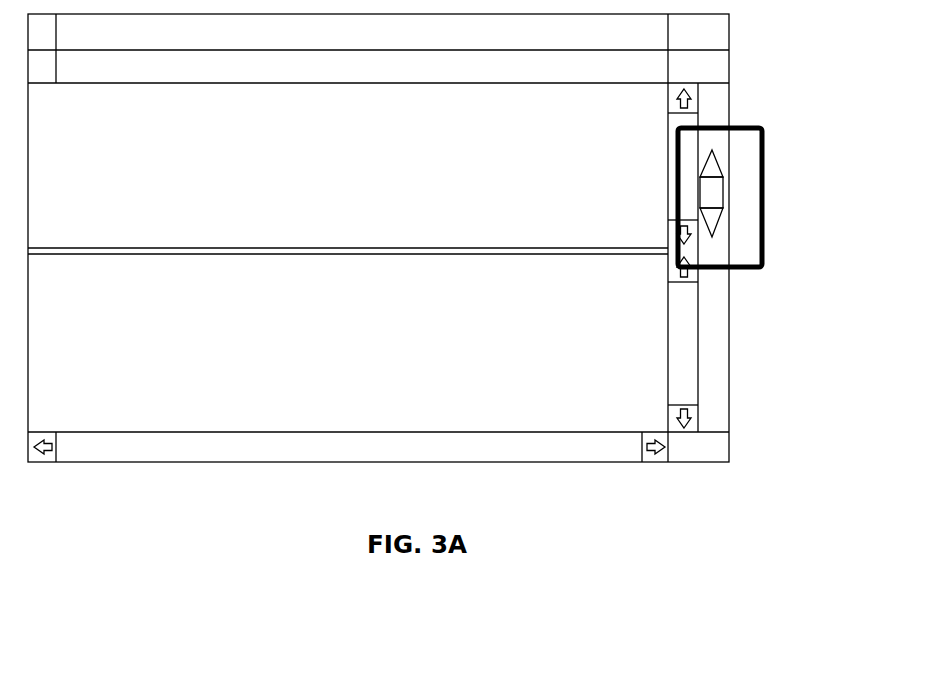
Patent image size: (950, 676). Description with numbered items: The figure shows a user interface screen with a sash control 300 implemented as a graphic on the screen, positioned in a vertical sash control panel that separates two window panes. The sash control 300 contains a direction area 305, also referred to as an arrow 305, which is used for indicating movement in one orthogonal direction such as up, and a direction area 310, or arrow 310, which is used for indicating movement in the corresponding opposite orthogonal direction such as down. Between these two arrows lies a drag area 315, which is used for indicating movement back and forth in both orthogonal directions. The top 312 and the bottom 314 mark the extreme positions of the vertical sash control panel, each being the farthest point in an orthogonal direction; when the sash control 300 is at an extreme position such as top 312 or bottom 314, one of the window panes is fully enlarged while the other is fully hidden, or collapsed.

The sash control 300 is at (787, 138).
The top extreme position 312 is at (720, 97).
The direction area 305 is at (714, 167).
The drag area 315 is at (713, 198).
The direction area 310 is at (715, 220).
The bottom extreme position 314 is at (710, 432).